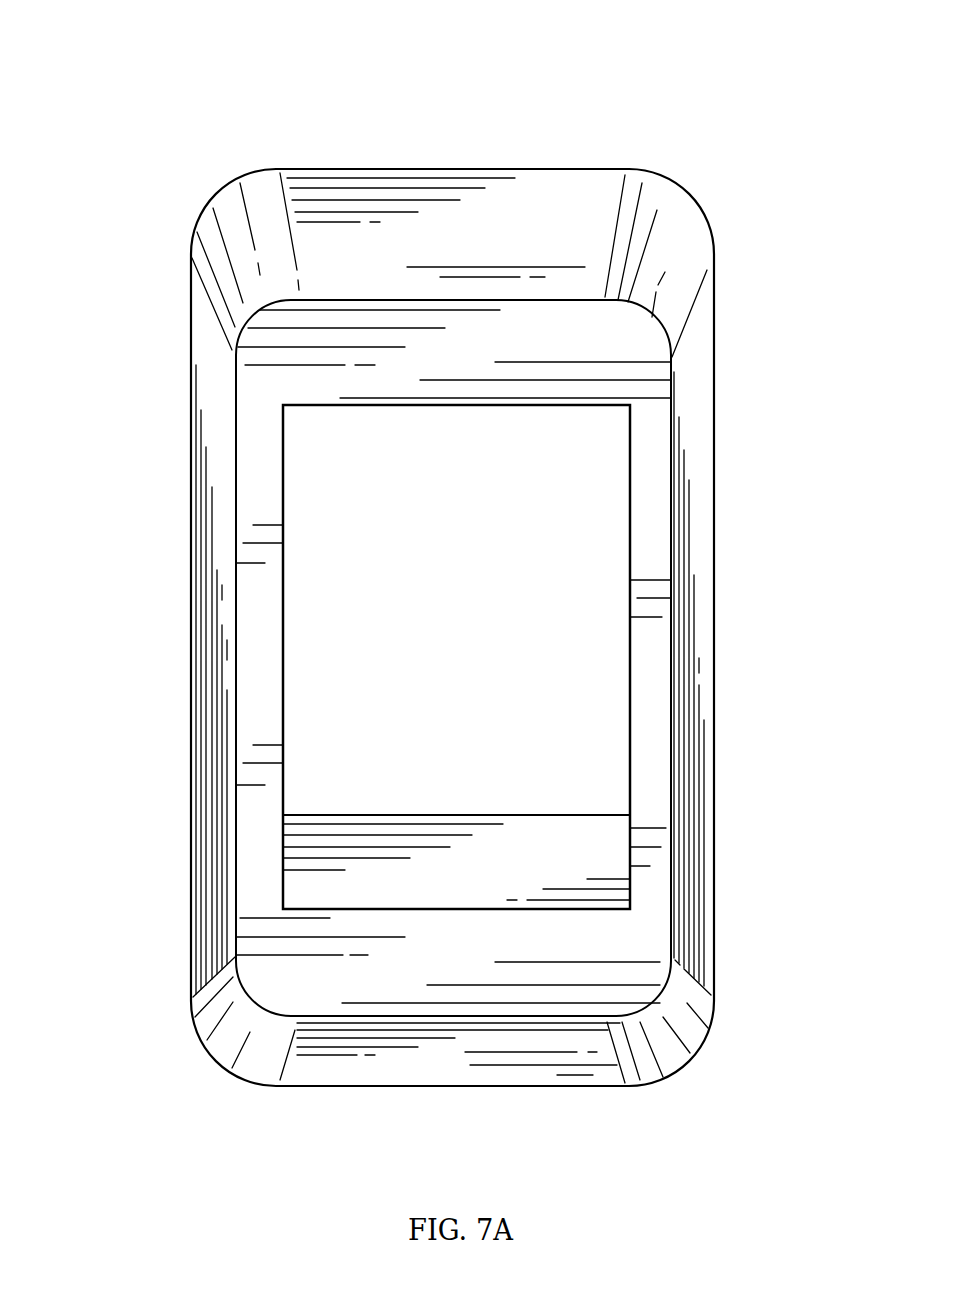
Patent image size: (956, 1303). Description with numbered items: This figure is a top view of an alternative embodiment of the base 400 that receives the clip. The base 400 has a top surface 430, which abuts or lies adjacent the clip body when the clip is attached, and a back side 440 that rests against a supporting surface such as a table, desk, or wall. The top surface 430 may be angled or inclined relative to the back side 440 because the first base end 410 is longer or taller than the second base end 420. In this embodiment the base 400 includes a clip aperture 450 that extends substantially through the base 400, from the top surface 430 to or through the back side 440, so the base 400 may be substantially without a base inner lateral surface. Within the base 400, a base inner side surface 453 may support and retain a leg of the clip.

The base 400 is at (100, 228).
The first base end 410 is at (545, 220).
The second base end 420 is at (568, 1055).
The top surface 430 is at (653, 443).
The back side 440 is at (475, 170).
The clip aperture 450 is at (509, 641).
The base inner side surface 453 is at (490, 888).